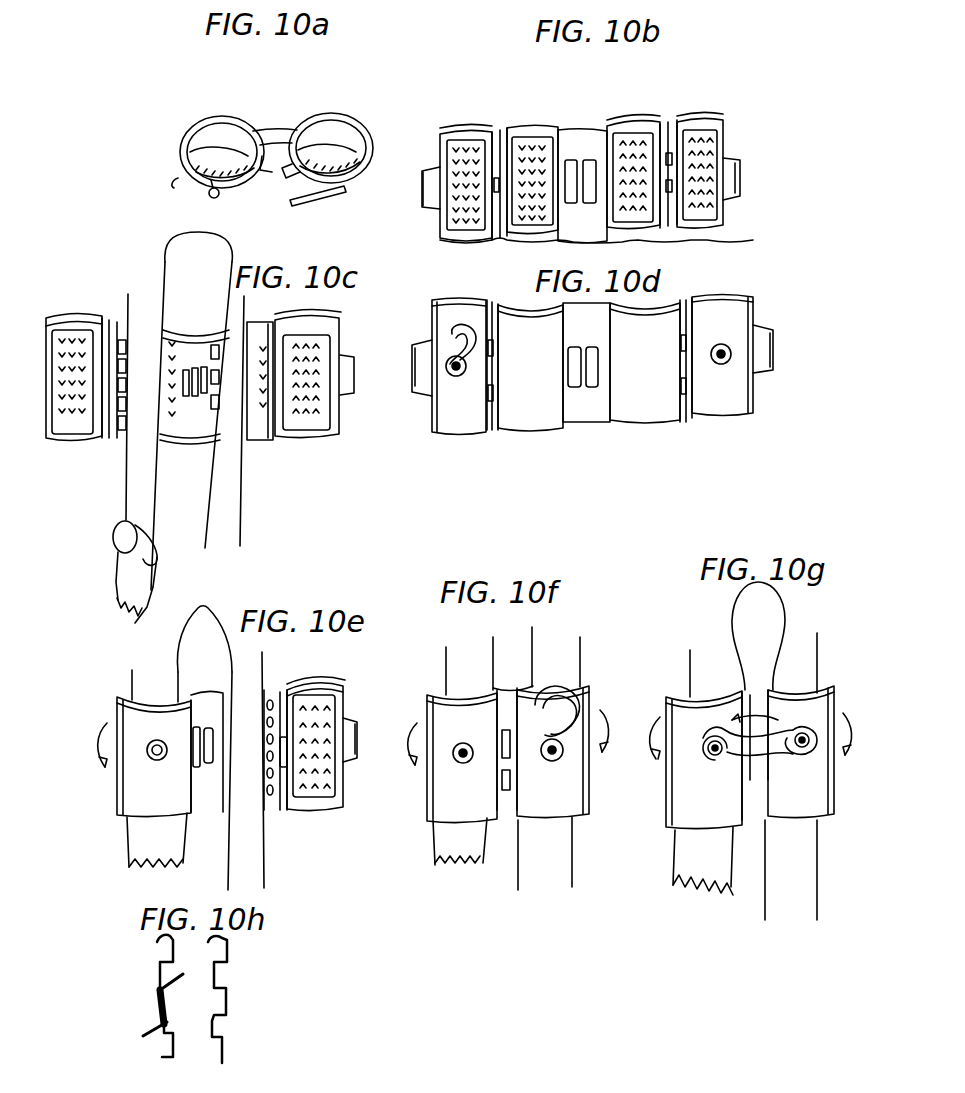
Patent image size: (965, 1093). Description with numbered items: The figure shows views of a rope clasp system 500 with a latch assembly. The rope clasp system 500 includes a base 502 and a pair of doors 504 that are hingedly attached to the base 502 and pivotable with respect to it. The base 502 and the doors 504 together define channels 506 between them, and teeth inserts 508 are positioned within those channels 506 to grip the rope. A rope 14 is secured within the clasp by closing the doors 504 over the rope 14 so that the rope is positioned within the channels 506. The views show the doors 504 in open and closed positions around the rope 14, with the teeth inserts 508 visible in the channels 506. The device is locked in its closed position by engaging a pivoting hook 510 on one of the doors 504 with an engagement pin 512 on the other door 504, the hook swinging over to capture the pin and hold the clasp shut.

In FIG. 10C, the rope 14 is at (124, 514).
In FIG. 10A, the rope clasp system 500 is at (134, 128).
In FIG. 10B, the rope clasp system 500 is at (762, 106).
In FIG. 10C, the rope clasp system 500 is at (296, 468).
In FIG. 10D, the rope clasp system 500 is at (662, 442).
In FIG. 10E, the rope clasp system 500 is at (72, 789).
In FIG. 10F, the rope clasp system 500 is at (417, 831).
In FIG. 10G, the rope clasp system 500 is at (852, 678).
In FIG. 10A, the base 502 is at (356, 130).
In FIG. 10B, the base 502 is at (646, 122).
In FIG. 10A, the doors 504 is at (184, 180).
In FIG. 10B, the doors 504 is at (720, 224).
In FIG. 10E, the doors 504 is at (344, 690).
In FIG. 10A, the channels 506 is at (206, 143).
In FIG. 10B, the teeth inserts 508 is at (529, 148).
In FIG. 10E, the teeth inserts 508 is at (312, 796).
In FIG. 10D, the pivoting hook 510 is at (468, 318).
In FIG. 10F, the pivoting hook 510 is at (592, 716).
In FIG. 10G, the pivoting hook 510 is at (608, 749).
In FIG. 10D, the engagement pin 512 is at (732, 358).
In FIG. 10F, the engagement pin 512 is at (462, 756).
In FIG. 10G, the engagement pin 512 is at (711, 764).